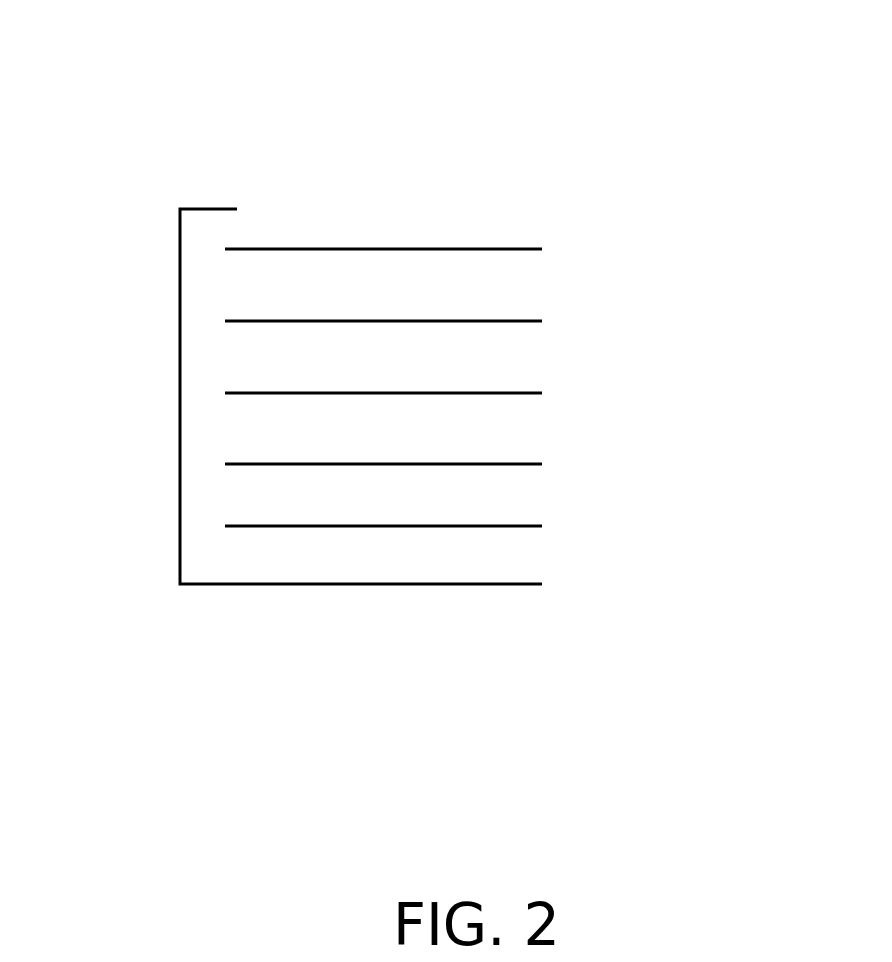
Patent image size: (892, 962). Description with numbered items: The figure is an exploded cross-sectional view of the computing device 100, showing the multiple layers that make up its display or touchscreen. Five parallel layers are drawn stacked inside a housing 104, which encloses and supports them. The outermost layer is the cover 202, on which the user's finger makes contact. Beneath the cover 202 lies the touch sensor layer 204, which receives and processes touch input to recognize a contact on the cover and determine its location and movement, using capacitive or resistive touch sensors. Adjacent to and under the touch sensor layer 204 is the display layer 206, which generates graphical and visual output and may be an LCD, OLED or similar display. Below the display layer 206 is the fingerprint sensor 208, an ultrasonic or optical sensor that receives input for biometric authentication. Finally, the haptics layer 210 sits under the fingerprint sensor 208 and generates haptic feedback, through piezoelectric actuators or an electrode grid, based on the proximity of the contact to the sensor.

The computing device 100 is at (194, 100).
The housing 104 is at (293, 584).
The cover 202 is at (456, 242).
The touch sensor layer 204 is at (528, 319).
The display layer 206 is at (494, 392).
The fingerprint sensor 208 is at (526, 462).
The haptics layer 210 is at (494, 524).